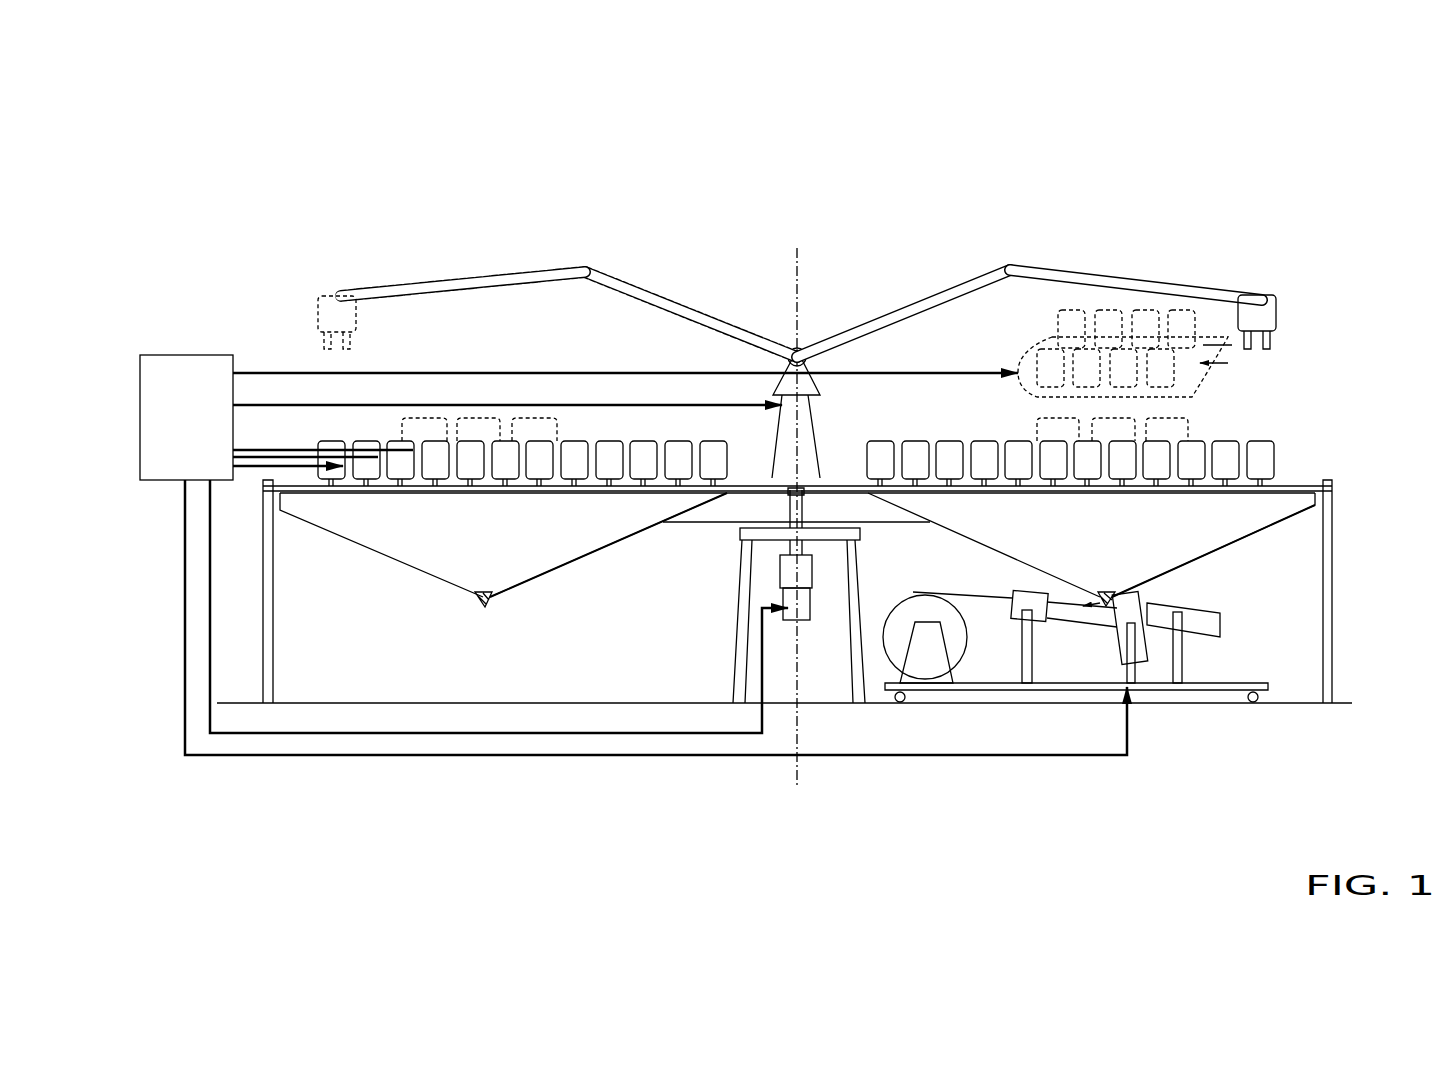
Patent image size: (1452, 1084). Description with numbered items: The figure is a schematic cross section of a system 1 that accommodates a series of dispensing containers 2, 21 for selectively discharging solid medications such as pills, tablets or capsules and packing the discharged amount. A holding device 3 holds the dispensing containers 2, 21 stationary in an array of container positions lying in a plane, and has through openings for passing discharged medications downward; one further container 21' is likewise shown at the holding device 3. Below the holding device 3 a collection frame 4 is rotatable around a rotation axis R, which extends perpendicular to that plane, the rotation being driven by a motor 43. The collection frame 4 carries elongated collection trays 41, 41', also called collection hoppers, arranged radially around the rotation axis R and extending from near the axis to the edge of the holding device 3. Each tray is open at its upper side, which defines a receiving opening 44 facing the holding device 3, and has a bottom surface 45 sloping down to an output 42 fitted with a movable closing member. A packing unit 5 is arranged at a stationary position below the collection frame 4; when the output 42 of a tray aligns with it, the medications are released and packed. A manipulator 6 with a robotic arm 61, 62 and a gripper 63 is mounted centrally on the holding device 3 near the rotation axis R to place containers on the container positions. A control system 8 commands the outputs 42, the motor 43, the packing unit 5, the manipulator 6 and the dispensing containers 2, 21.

The system 1 is at (1338, 172).
The dispensing containers 2 is at (640, 447).
The holding device 3 is at (838, 480).
The collection frame 4 is at (873, 522).
The packing unit 5 is at (1200, 663).
The manipulator system 6 is at (790, 428).
The control system 8 is at (633, 555).
The dispensing containers 21 is at (1142, 419).
The containers deposited on conveyor 21' is at (431, 425).
The collection tray 41 is at (1213, 554).
The collection tray 41' is at (608, 545).
The output 42 is at (483, 606).
The motor 43 is at (805, 615).
The receiving opening 44 is at (490, 493).
The bottom surface 45 is at (375, 553).
The robotic arm 61 is at (712, 318).
The robotic arm 62 is at (515, 272).
The gripper 63 is at (320, 310).
The rotation axis R is at (807, 527).